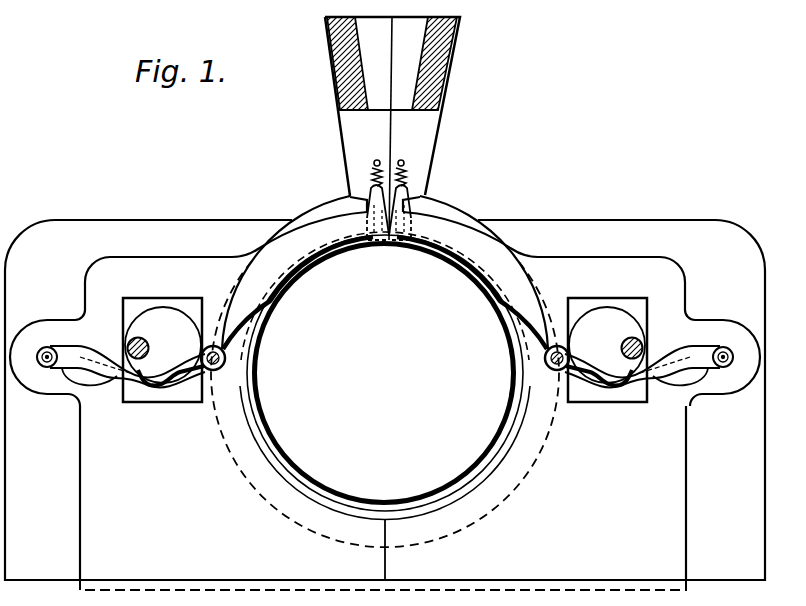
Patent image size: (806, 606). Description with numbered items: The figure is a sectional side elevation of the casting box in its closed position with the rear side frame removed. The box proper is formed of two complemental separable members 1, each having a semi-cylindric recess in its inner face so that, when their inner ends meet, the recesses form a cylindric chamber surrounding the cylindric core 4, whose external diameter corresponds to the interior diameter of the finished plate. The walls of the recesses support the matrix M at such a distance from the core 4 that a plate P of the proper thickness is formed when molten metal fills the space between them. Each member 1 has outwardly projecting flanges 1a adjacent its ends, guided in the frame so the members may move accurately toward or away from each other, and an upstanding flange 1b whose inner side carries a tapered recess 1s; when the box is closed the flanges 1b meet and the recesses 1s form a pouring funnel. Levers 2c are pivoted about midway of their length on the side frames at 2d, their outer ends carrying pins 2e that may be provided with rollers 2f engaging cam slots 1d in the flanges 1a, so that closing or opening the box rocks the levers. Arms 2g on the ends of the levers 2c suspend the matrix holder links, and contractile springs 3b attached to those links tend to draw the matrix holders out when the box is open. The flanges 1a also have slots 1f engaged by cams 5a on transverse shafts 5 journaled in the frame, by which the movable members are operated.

The complemental separable member 1 is at (322, 213).
The outwardly projecting flange 1a is at (92, 517).
The tapered recess 1s is at (365, 42).
The upstanding flange 1b is at (347, 90).
The cam slot 1d is at (100, 382).
The slot 1f is at (185, 305).
The lever 2c is at (172, 362).
The pivot 2d is at (227, 363).
The pin 2e is at (45, 368).
The roller 2f is at (48, 346).
The arm 2g is at (360, 195).
The contractile spring 3b is at (370, 168).
The cylindric core 4 is at (473, 447).
The transverse shaft 5 is at (128, 345).
The cam 5a is at (153, 322).
The matrix M is at (482, 483).
The plate P is at (313, 490).